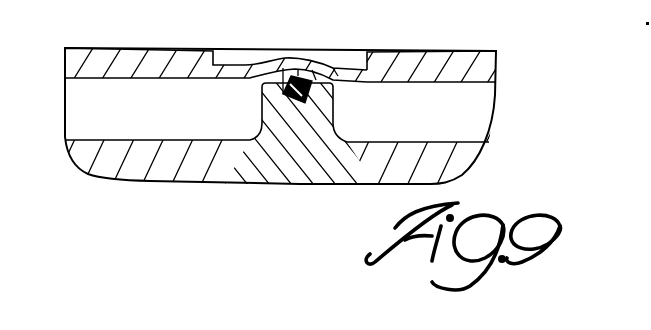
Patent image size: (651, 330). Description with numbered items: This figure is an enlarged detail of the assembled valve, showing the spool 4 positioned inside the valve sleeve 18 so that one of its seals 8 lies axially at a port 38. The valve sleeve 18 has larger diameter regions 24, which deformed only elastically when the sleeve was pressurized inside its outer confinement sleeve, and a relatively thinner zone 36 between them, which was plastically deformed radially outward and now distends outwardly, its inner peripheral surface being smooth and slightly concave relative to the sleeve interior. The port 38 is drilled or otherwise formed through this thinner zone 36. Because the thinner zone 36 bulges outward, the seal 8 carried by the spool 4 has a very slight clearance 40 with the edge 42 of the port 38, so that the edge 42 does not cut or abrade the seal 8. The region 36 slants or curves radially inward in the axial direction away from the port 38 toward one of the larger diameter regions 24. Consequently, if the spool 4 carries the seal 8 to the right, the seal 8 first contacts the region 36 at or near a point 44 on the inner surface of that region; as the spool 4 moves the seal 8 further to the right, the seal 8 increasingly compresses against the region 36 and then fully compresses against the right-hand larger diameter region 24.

The spool 4 is at (434, 147).
The seal 8 is at (300, 101).
The valve sleeve 18 is at (501, 47).
The larger diameter region 24 is at (143, 50).
The thinner zone 36 is at (250, 80).
The port 38 is at (288, 70).
The clearance 40 is at (316, 80).
The edge 42 is at (298, 72).
The point 44 is at (338, 76).